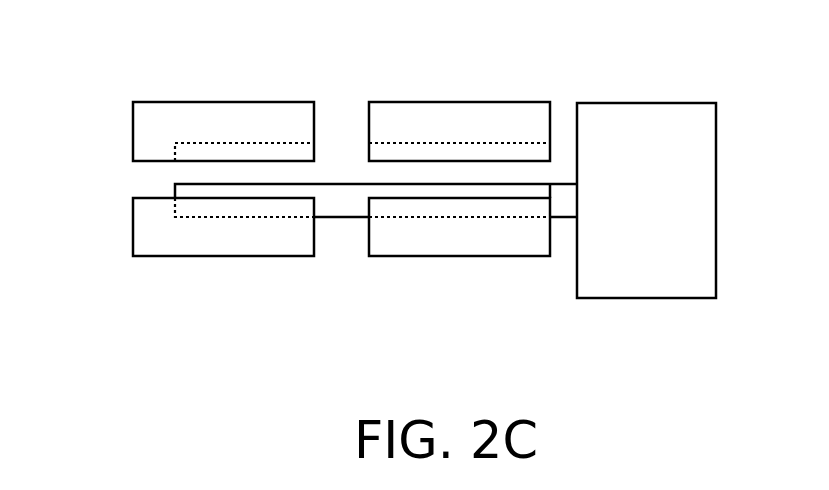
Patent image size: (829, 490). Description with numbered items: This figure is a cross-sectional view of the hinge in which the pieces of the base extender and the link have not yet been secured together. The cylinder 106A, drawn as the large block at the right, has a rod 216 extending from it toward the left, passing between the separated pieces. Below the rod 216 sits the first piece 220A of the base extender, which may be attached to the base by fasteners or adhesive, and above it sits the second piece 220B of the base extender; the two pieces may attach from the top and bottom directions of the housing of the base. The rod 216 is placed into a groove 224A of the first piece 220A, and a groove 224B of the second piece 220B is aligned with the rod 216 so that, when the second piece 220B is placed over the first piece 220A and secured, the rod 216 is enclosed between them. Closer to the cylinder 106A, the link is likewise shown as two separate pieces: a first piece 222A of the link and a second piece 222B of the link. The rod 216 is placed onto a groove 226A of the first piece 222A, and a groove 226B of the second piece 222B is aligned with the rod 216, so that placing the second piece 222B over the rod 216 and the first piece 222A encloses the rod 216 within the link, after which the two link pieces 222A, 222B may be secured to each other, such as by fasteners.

The cylinder 106A is at (716, 205).
The rod 216 is at (336, 218).
The first piece of the base extender 220A is at (250, 256).
The second piece of the base extender 220B is at (256, 102).
The first piece of the link 222A is at (497, 256).
The second piece of the link 222B is at (516, 102).
The groove of the first piece of the base extender 224A is at (186, 218).
The groove of the second piece of the base extender 224B is at (189, 140).
The groove of the first piece of the link 226A is at (430, 220).
The groove of the second piece of the link 226B is at (430, 140).